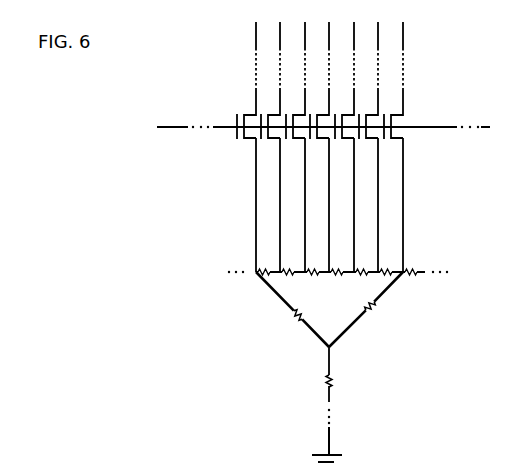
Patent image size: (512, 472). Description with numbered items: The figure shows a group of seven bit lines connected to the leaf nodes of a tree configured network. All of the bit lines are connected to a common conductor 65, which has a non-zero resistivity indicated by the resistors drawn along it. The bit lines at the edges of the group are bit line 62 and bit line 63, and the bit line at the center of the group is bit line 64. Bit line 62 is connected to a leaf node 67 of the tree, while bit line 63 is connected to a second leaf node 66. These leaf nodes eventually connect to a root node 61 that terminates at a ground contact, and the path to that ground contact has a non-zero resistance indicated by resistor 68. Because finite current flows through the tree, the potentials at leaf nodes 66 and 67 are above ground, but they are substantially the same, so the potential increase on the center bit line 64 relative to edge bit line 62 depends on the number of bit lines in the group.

The root node 61 is at (328, 438).
The bit line 62 is at (256, 212).
The bit line 63 is at (403, 208).
The bit line 64 is at (331, 216).
The common conductor 65 is at (415, 273).
The second leaf node 66 is at (382, 294).
The leaf node 67 is at (280, 297).
The resistor 68 is at (329, 373).